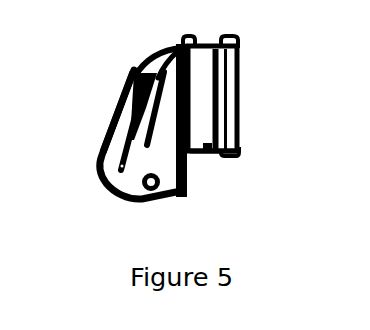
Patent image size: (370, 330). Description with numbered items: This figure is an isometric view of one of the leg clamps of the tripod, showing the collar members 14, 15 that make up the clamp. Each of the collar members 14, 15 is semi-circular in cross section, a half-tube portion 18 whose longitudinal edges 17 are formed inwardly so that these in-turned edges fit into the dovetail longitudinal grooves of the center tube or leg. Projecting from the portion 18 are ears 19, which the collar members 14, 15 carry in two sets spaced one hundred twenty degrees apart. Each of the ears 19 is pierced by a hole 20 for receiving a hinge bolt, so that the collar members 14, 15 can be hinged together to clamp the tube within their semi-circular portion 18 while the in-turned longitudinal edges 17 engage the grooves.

The collar member 14 is at (118, 109).
The collar member 15 is at (142, 52).
The longitudinal edges 17 is at (240, 141).
The portion 18 is at (203, 153).
The ears 19 is at (107, 132).
The holes 20 is at (156, 189).